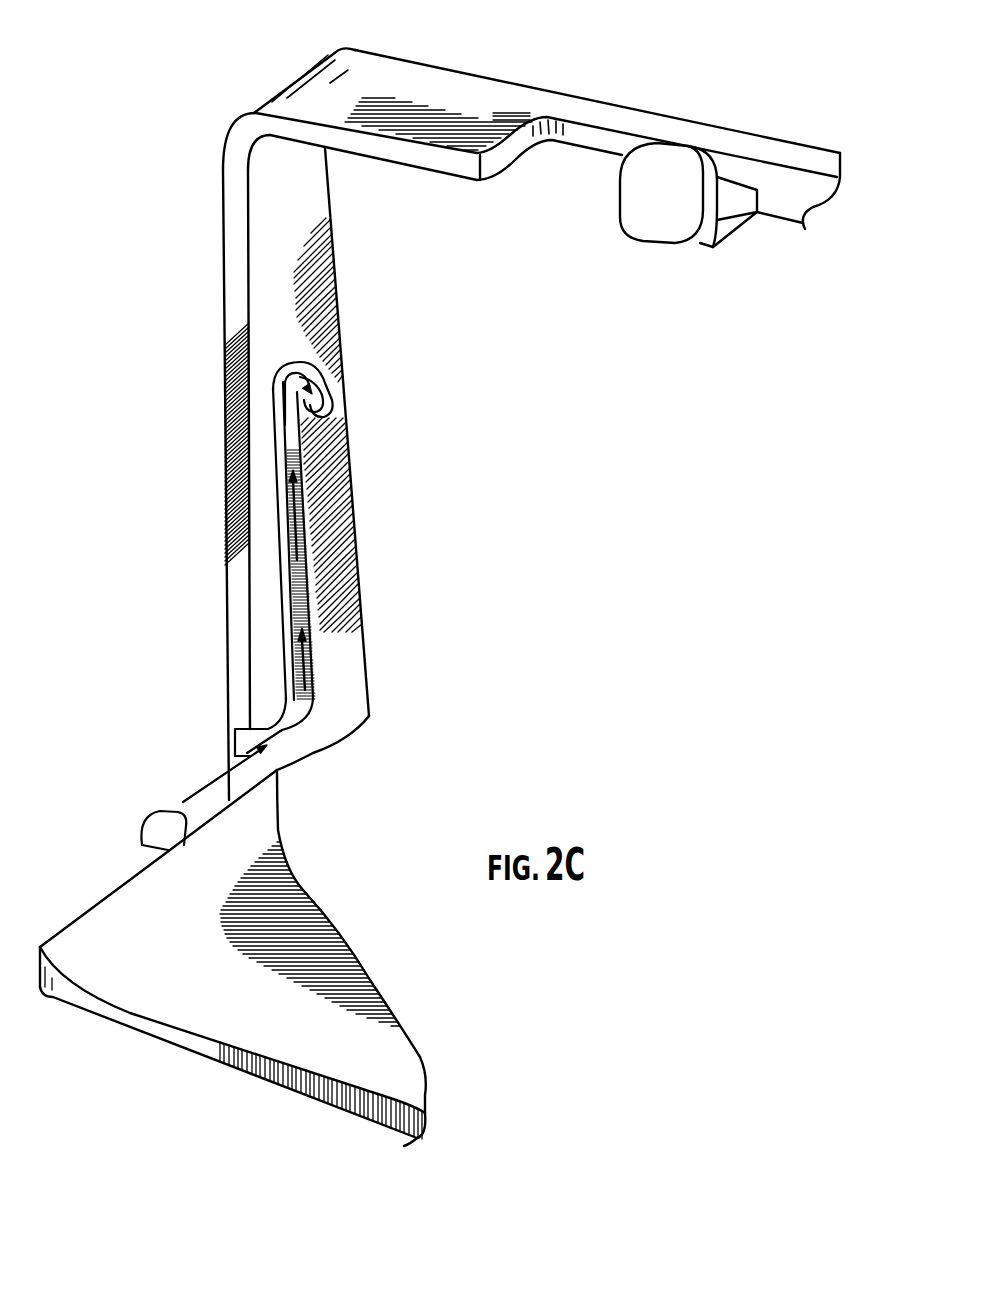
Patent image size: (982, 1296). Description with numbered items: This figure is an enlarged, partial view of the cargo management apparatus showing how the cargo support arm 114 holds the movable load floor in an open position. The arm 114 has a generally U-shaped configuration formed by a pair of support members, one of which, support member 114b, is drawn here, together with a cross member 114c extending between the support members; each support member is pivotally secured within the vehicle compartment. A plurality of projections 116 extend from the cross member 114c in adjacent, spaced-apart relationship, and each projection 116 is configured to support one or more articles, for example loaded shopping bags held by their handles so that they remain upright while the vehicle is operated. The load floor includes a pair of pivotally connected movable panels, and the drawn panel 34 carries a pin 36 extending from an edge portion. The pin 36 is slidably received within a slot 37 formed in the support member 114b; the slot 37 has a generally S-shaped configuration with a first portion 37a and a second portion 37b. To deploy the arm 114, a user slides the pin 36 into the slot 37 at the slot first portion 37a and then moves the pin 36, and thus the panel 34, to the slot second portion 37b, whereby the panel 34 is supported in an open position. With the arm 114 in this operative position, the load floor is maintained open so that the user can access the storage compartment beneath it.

The arm 114 is at (293, 82).
The support member 114b is at (223, 378).
The cross member 114c is at (522, 97).
The projection 116 is at (663, 213).
The slot 37 is at (313, 617).
The slot first portion 37a is at (287, 742).
The slot second portion 37b is at (323, 395).
The pin 36 is at (177, 825).
The movable panel 34 is at (168, 977).